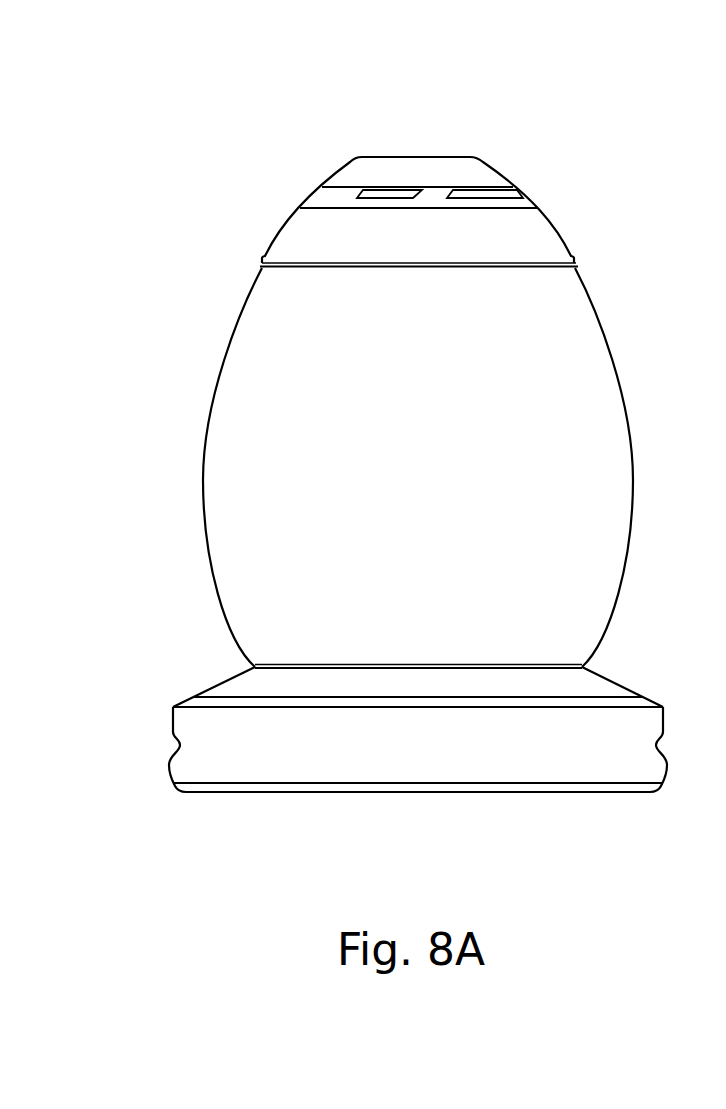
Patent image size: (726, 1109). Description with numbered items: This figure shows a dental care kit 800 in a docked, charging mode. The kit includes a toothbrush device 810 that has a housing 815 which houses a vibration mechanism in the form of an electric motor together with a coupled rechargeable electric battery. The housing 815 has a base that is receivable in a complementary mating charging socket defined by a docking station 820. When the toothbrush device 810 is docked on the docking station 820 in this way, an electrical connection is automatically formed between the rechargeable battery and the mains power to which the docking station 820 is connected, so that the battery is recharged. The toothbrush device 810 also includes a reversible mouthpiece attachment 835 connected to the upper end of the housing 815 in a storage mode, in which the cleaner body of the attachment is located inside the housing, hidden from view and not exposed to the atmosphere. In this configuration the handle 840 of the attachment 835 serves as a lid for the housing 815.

The dental care kit 800 is at (228, 195).
The toothbrush device 810 is at (630, 312).
The housing 815 is at (598, 512).
The docking station 820 is at (192, 703).
The mouthpiece attachment 835 is at (503, 167).
The handle 840 is at (285, 250).